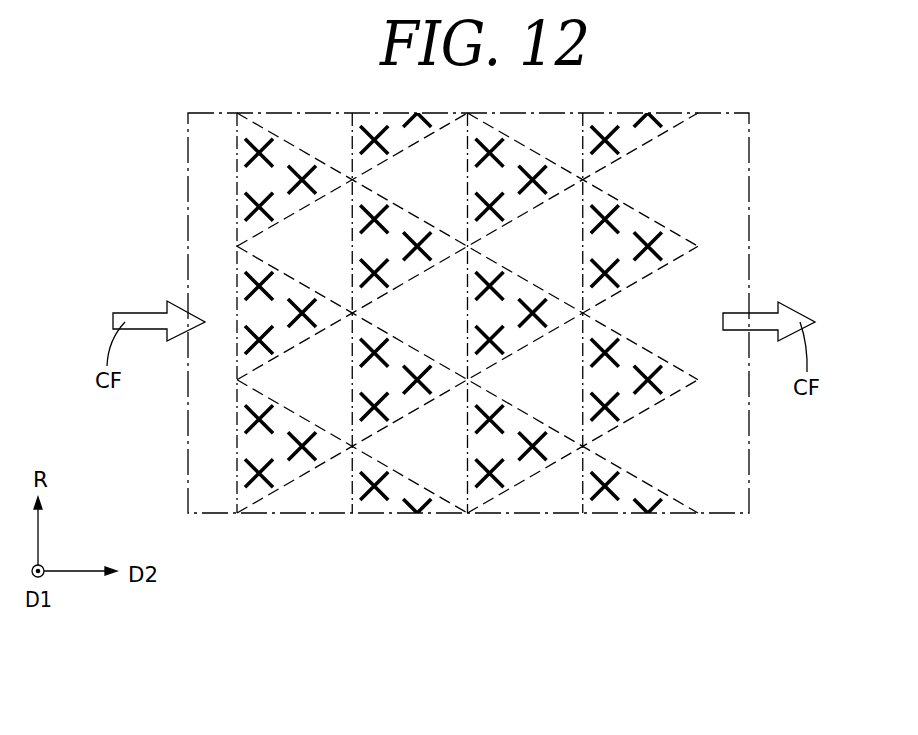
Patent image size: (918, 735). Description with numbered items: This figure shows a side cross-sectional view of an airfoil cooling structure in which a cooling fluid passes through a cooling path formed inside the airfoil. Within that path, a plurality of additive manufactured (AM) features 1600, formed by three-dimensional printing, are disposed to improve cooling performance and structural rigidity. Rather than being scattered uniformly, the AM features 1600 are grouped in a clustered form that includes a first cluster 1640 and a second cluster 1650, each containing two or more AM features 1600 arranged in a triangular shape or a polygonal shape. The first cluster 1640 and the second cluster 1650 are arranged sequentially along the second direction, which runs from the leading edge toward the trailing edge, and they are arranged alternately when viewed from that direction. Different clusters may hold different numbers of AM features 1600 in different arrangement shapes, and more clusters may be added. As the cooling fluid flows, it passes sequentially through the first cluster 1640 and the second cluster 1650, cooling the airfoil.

The additive manufactured feature 1600 is at (259, 207).
The first cluster 1640 is at (294, 348).
The second cluster 1650 is at (410, 280).